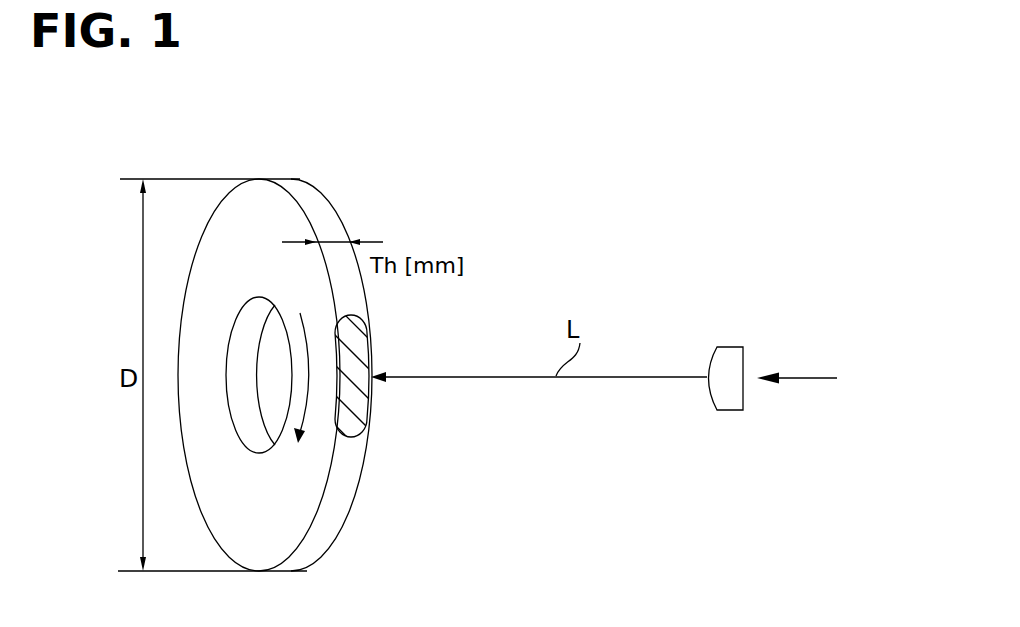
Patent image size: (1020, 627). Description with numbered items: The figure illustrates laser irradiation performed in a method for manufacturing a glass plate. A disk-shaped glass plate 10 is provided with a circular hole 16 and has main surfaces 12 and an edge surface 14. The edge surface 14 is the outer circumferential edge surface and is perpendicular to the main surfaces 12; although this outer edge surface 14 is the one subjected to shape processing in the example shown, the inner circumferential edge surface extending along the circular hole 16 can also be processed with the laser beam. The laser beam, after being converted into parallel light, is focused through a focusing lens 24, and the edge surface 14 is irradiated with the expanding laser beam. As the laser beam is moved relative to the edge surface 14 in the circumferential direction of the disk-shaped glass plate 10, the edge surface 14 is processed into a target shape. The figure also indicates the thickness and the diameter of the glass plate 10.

The disk-shaped glass plate 10 is at (350, 316).
The main surfaces 12 is at (262, 192).
The edge surface 14 is at (320, 207).
The circular hole 16 is at (268, 375).
The focusing lens 24 is at (731, 347).